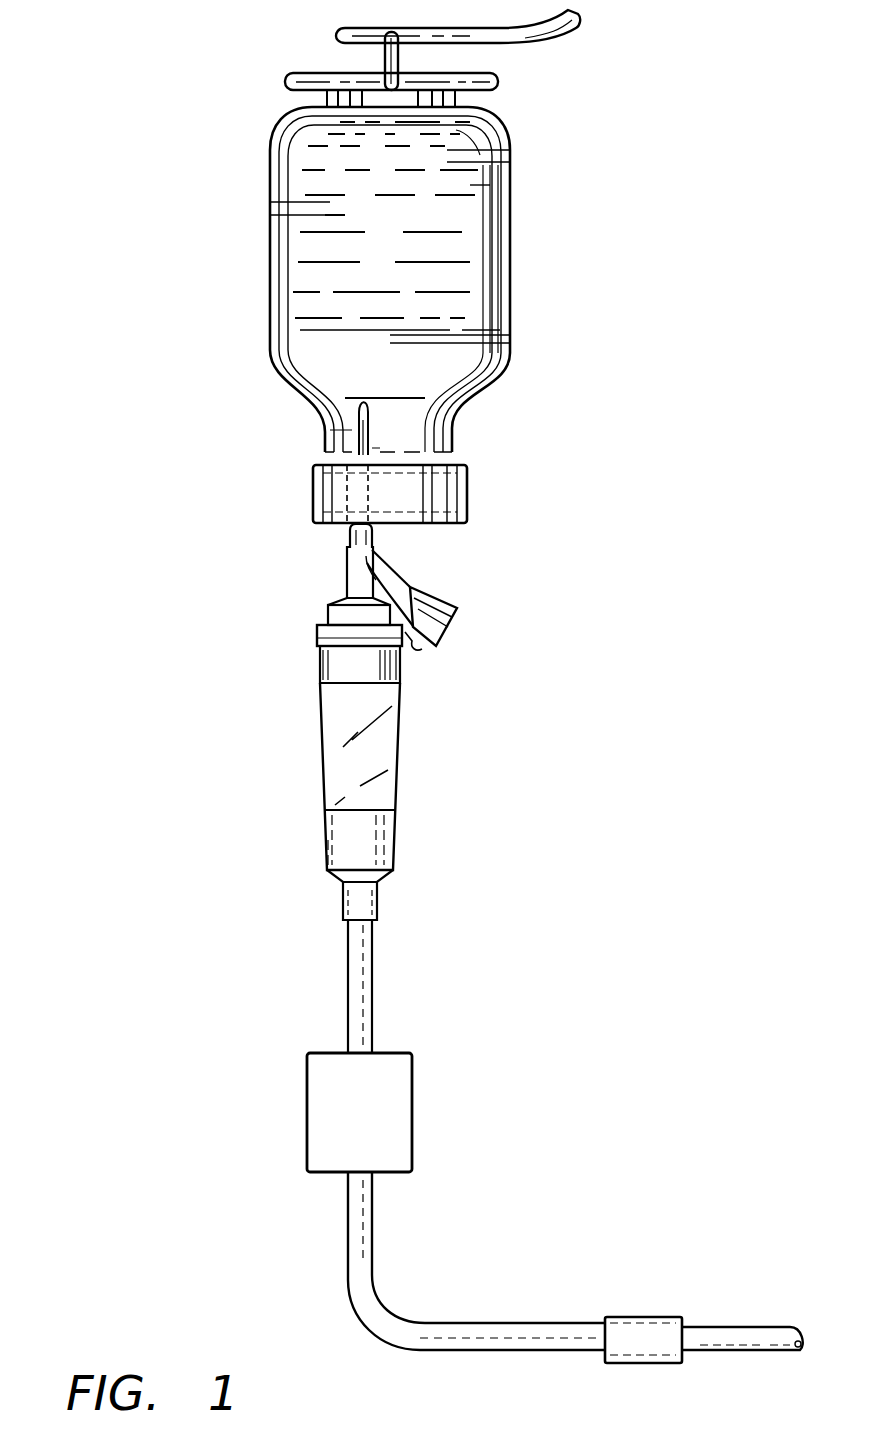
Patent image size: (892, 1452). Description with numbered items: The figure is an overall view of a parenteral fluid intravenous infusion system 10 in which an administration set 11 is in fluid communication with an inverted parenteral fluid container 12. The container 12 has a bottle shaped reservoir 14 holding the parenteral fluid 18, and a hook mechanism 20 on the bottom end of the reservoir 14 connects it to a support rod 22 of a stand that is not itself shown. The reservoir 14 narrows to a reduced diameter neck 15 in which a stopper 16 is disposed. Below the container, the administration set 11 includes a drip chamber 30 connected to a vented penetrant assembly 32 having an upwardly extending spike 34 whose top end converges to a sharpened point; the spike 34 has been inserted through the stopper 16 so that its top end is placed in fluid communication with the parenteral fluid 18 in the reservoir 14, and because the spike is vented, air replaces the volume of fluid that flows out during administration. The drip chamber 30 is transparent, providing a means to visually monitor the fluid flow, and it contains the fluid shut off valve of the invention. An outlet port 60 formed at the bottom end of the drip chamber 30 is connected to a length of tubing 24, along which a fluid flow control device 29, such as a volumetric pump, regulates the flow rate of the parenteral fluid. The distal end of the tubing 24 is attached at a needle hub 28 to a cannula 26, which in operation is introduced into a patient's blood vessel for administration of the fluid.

The parenteral fluid intravenous infusion system 10 is at (732, 114).
The administration set 11 is at (574, 883).
The inverted parenteral fluid container 12 is at (512, 272).
The bottle shaped reservoir 14 is at (510, 180).
The reduced diameter neck 15 is at (456, 434).
The stopper 16 is at (468, 500).
The parenteral fluid 18 is at (302, 272).
The hook mechanism 20 is at (386, 68).
The support rod 22 is at (348, 33).
The tubing 24 is at (347, 975).
The cannula 26 is at (760, 1327).
The needle hub 28 is at (644, 1317).
The fluid flow control device 29 is at (413, 1092).
The drip chamber 30 is at (322, 746).
The vented penetrant assembly 32 is at (410, 580).
The spike 34 is at (360, 442).
The outlet port 60 is at (378, 907).